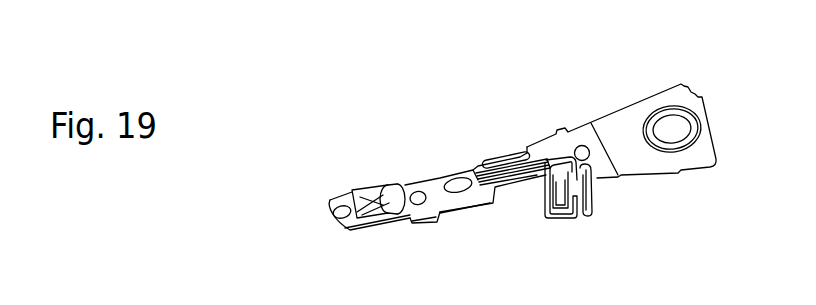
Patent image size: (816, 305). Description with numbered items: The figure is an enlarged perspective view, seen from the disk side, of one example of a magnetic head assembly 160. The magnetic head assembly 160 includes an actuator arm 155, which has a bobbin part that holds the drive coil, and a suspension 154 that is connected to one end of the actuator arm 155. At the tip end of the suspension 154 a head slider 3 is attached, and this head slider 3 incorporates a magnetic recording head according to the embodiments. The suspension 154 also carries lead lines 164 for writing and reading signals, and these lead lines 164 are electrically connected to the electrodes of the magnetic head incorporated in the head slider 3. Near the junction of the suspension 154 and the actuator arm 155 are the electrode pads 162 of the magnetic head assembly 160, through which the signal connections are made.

The magnetic head assembly 160 is at (428, 106).
The suspension 154 is at (473, 166).
The actuator arm 155 is at (658, 162).
The electrode pads 162 is at (570, 221).
The lead lines 164 is at (440, 221).
The head slider 3 is at (368, 190).